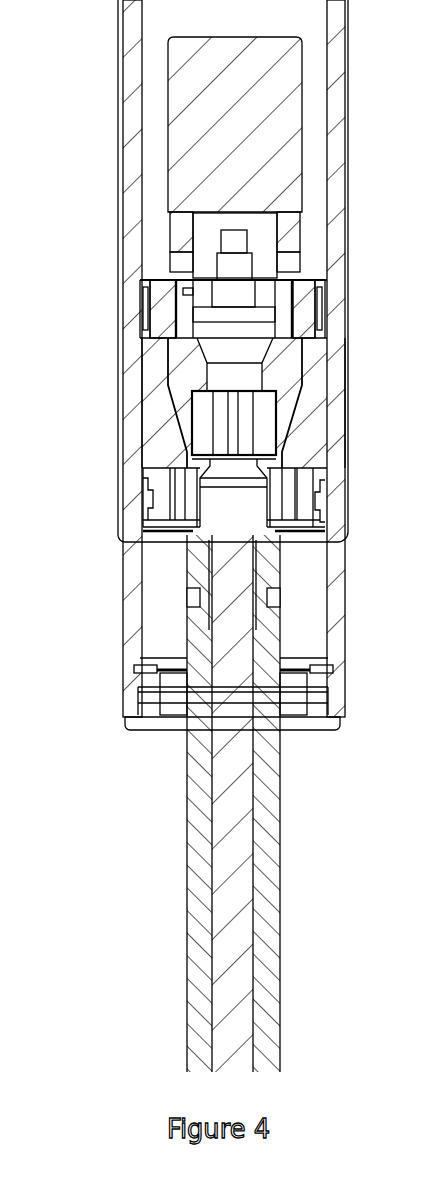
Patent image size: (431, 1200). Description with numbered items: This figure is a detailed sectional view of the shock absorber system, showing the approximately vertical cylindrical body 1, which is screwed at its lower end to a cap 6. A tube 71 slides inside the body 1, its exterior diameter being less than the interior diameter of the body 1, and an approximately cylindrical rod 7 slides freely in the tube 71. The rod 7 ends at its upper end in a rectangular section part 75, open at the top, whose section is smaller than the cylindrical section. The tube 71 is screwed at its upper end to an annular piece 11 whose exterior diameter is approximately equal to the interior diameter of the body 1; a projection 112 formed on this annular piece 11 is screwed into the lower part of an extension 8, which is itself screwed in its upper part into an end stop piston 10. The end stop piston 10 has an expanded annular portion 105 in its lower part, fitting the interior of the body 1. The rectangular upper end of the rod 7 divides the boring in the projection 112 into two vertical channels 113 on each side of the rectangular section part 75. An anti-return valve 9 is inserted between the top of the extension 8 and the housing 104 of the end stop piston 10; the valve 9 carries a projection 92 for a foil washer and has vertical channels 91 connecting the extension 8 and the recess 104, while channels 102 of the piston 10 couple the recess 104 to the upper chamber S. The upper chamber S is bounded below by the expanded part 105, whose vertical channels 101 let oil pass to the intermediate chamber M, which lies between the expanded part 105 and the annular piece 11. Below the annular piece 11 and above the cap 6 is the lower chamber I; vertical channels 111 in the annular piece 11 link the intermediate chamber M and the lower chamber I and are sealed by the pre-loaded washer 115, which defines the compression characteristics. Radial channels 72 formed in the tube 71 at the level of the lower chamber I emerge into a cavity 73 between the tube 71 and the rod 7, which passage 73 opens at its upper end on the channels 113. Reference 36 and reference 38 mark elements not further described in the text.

The cylindrical body 1 is at (333, 100).
The upper chamber S is at (153, 147).
The tube wall 36 is at (388, 401).
The end stop piston 10 is at (278, 82).
The housing 104 is at (260, 223).
The channel 102 is at (287, 258).
The projection 92 is at (235, 273).
The anti-return valve 9 is at (295, 276).
The vertical channels 91 is at (203, 293).
The vertical channels 101 is at (160, 307).
The expanded annular portion 105 is at (327, 318).
The extension 8 is at (280, 377).
The intermediate chamber M is at (160, 424).
The vertical channels 113 is at (222, 418).
The projection 112 is at (205, 437).
The rectangular section part 75 is at (232, 430).
The support block 38 is at (285, 498).
The vertical channels 111 is at (287, 487).
The annular piece 11 is at (307, 510).
The pre-loaded washer 115 is at (165, 531).
The rod 7 is at (232, 885).
The tube 71 is at (197, 783).
The radial channels 72 is at (265, 598).
The cavity 73 is at (188, 578).
The lower chamber I is at (162, 623).
The cap 6 is at (313, 710).